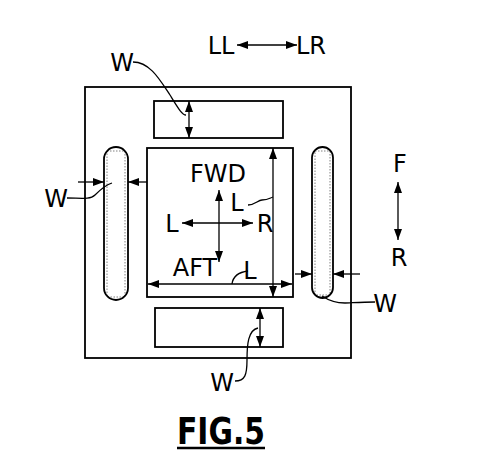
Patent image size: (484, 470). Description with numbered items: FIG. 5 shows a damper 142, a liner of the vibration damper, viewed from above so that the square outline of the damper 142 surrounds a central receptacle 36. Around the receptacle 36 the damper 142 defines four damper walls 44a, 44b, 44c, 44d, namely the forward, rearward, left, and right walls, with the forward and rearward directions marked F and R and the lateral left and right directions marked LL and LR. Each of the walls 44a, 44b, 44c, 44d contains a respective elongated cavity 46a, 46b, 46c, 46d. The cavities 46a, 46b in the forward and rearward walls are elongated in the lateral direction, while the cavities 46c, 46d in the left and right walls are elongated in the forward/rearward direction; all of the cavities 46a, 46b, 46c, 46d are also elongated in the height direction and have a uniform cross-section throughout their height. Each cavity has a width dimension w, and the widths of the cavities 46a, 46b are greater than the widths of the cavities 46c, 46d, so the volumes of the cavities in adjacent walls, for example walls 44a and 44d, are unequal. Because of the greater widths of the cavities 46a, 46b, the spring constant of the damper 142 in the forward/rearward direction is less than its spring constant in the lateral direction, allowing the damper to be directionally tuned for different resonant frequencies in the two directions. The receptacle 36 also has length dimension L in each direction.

The damper 142 is at (363, 328).
The receptacle 36 is at (253, 183).
The forward damper wall 44a is at (179, 95).
The rearward damper wall 44b is at (270, 352).
The left damper wall 44c is at (97, 218).
The right damper wall 44d is at (345, 168).
The elongated cavity 46a is at (208, 130).
The elongated cavity 46b is at (181, 342).
The elongated cavity 46c is at (115, 237).
The elongated cavity 46d is at (325, 255).